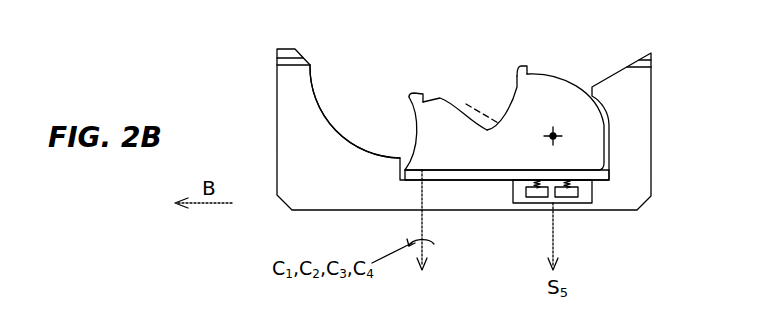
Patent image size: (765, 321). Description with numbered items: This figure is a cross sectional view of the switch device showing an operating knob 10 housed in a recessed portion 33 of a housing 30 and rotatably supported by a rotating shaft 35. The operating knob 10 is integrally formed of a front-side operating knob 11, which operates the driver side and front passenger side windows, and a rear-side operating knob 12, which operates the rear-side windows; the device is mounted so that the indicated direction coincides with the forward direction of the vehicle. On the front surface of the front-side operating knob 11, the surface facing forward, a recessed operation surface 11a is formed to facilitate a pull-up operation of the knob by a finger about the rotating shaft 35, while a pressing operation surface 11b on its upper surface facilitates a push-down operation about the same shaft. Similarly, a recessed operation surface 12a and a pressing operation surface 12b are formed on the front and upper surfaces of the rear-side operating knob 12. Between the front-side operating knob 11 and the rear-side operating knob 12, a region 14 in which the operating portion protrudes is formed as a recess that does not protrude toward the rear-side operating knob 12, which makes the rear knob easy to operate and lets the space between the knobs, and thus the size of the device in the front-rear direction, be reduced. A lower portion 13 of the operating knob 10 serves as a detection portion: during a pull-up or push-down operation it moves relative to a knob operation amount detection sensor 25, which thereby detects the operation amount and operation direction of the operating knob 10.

The housing 30 is at (276, 78).
The recessed portion 33 is at (321, 92).
The operating knob 10 is at (453, 150).
The front-side operating knob 11 is at (434, 113).
The recessed operation surface 11a is at (407, 110).
The pressing operation surface 11b is at (427, 97).
The rear-side operating knob 12 is at (552, 97).
The recessed operation surface 12a is at (516, 91).
The pressing operation surface 12b is at (537, 67).
The region 14 is at (471, 105).
The rotating shaft 35 is at (556, 130).
The lower portion 13 is at (553, 169).
The knob operation amount detection sensor 25 is at (585, 203).